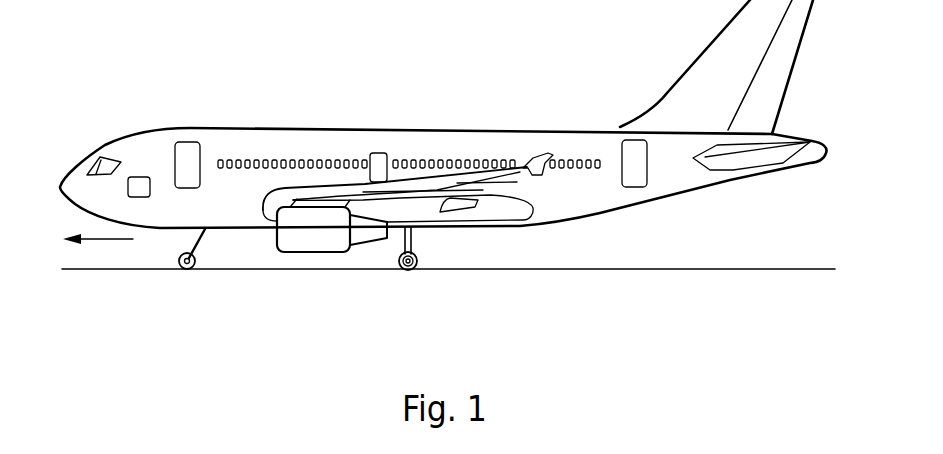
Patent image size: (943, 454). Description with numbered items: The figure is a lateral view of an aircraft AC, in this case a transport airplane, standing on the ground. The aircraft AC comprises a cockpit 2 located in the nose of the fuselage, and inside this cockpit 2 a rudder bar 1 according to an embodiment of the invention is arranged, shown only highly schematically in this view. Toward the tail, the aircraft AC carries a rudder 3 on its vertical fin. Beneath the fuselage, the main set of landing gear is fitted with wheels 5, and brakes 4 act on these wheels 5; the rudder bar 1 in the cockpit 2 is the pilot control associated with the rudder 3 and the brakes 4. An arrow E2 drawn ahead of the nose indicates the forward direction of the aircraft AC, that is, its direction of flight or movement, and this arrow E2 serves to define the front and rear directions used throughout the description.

The rudder bar 1 is at (141, 170).
The cockpit 2 is at (125, 162).
The rudder 3 is at (775, 67).
The brakes 4 is at (392, 293).
The wheels 5 is at (420, 267).
The aircraft AC is at (466, 179).
The arrow E2 is at (110, 239).